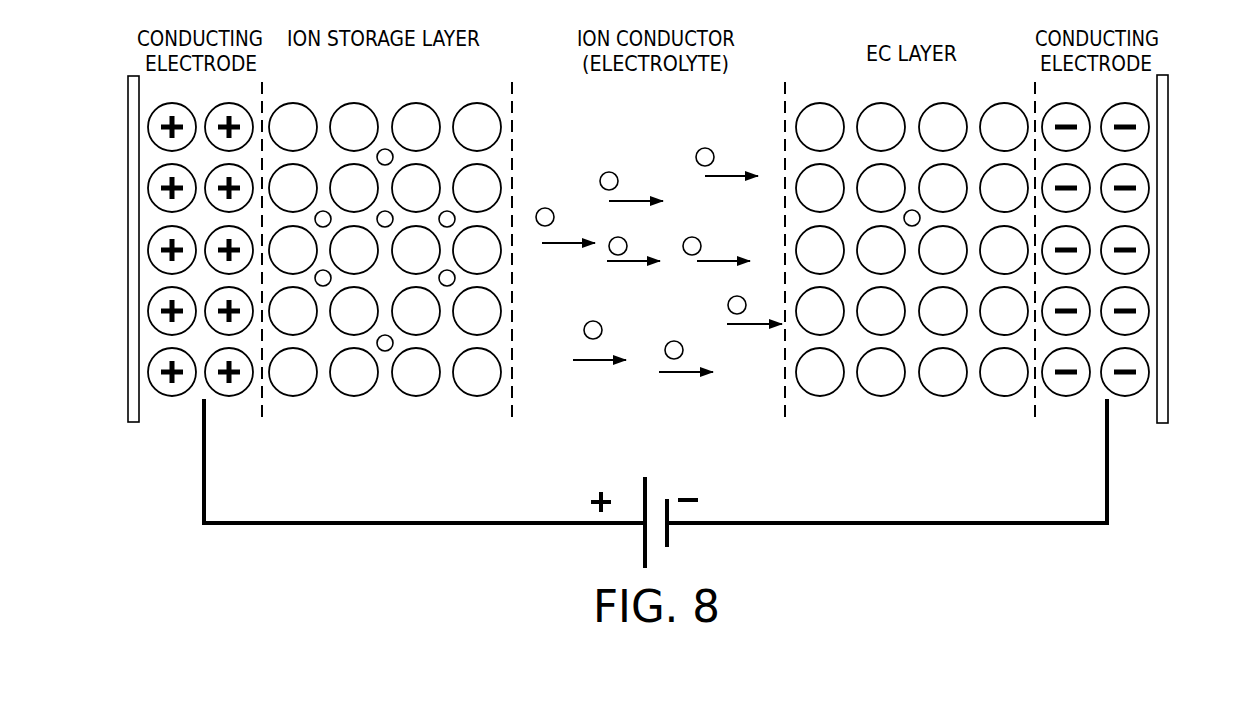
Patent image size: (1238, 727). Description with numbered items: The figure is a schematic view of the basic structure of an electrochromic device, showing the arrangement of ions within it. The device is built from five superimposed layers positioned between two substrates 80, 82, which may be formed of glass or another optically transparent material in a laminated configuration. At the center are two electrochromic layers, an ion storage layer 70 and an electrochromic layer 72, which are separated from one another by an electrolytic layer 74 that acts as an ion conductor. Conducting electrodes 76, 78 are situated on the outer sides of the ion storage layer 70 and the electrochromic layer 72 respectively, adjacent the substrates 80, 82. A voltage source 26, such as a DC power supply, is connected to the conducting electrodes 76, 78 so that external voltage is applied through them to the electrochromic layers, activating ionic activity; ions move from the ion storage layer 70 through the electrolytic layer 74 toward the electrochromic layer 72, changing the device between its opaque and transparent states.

The voltage source 26 is at (578, 505).
The ion storage layer 70 is at (466, 92).
The electrochromic layer 72 is at (848, 92).
The electrolytic layer 74 is at (596, 130).
The conducting electrode 76 is at (165, 95).
The conducting electrode 78 is at (1052, 95).
The substrate 80 is at (123, 220).
The substrate 82 is at (1172, 220).